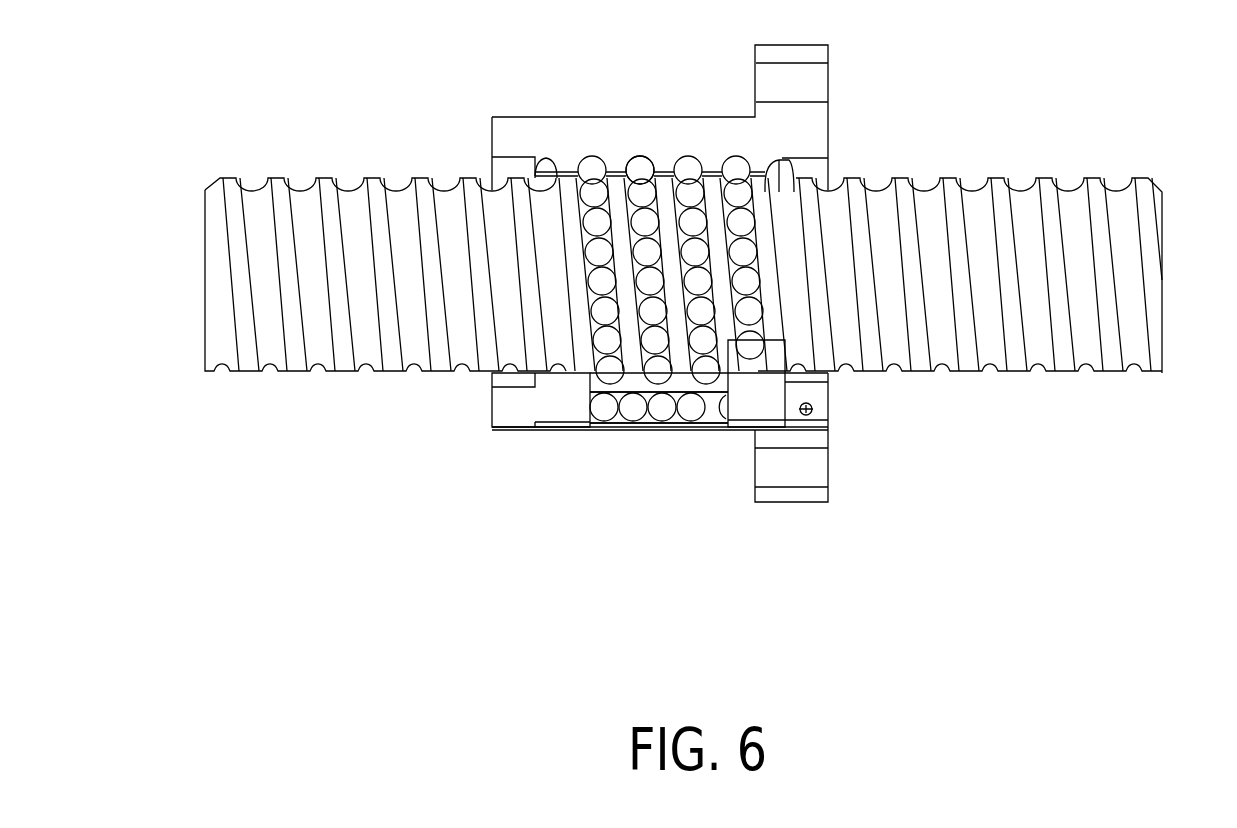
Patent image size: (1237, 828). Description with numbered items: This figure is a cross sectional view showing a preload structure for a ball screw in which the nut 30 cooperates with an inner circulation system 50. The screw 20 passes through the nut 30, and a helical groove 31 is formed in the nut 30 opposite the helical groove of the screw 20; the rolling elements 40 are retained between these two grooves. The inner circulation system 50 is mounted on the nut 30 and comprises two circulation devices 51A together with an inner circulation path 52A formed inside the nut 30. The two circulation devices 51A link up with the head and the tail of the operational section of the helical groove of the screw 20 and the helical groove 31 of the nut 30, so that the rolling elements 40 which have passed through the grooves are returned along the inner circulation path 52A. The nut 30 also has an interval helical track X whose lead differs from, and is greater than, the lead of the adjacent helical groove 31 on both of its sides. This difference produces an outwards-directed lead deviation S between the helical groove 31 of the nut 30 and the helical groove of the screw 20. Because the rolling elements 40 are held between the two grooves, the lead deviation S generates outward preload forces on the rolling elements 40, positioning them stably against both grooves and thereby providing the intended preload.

The screw 20 is at (1157, 240).
The nut 30 is at (753, 142).
The helical groove 31 is at (682, 163).
The rolling elements 40 is at (779, 172).
The inner circulation system 50 is at (688, 435).
The circulation devices 51A is at (568, 410).
The inner circulation path 52A is at (643, 425).
The interval helical track X is at (660, 170).
The lead deviation S is at (625, 71).